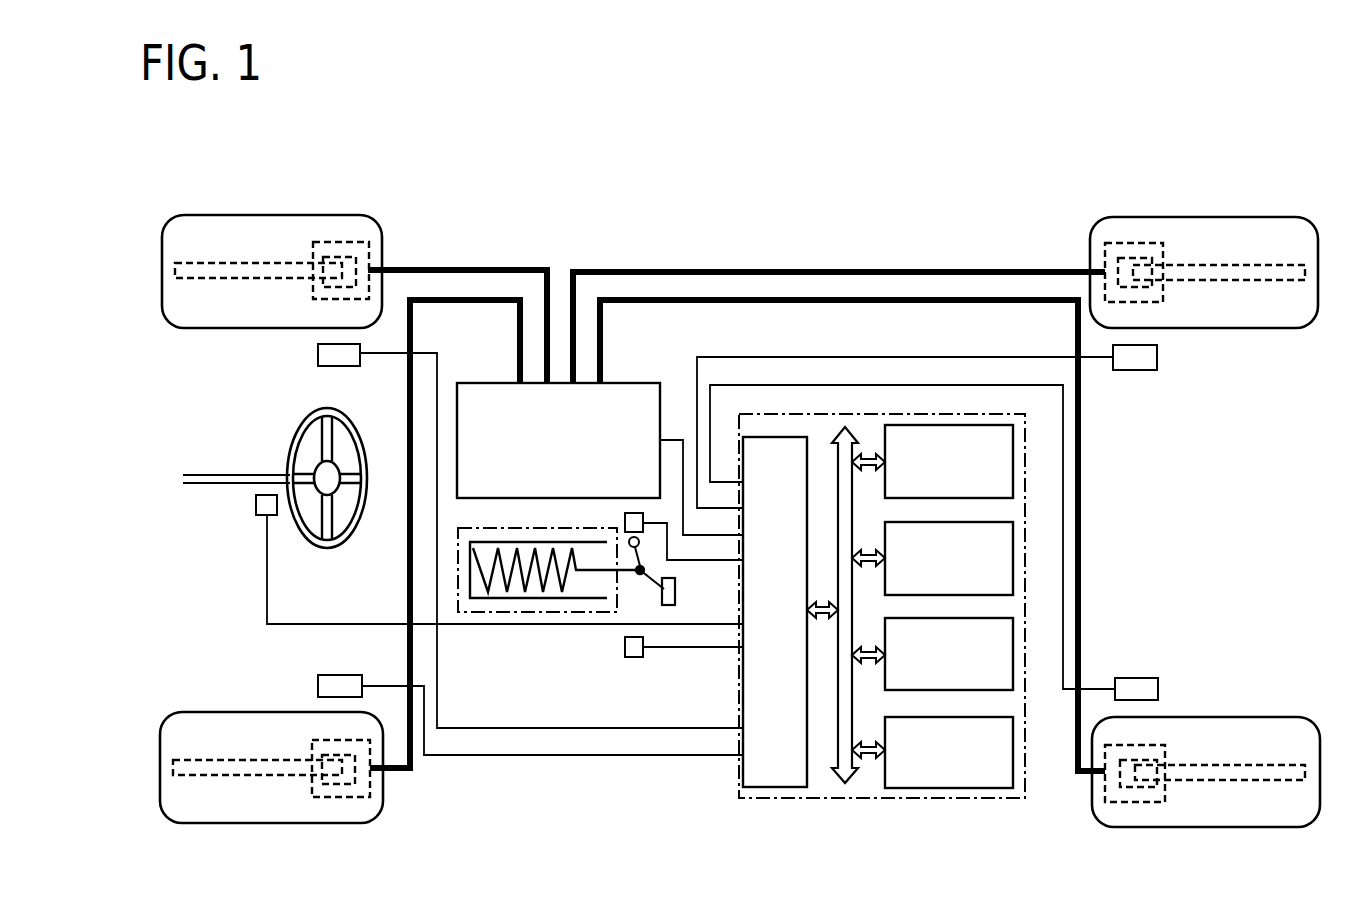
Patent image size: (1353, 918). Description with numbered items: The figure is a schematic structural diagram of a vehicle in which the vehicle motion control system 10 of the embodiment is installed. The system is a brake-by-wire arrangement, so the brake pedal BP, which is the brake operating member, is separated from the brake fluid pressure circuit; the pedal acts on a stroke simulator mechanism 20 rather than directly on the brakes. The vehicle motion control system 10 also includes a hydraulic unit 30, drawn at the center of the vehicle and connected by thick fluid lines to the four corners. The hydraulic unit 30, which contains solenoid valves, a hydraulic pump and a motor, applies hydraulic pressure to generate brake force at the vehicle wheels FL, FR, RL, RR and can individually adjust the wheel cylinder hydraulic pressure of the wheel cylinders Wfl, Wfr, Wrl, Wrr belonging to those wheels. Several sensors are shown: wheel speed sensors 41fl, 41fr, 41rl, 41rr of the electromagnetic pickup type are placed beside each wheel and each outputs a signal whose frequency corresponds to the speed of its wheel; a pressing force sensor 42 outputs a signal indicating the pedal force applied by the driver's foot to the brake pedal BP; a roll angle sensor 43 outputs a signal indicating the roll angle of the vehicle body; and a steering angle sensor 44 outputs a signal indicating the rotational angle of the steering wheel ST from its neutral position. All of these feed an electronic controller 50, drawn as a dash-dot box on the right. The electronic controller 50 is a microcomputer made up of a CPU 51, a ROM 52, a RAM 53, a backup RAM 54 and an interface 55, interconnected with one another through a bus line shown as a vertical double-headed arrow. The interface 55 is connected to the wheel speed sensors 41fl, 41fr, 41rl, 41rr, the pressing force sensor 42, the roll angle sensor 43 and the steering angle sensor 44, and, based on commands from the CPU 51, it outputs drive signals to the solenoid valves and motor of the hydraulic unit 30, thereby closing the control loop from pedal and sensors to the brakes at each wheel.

The vehicle motion control system 10 is at (775, 246).
The stroke simulator mechanism 20 is at (466, 528).
The hydraulic unit 30 is at (617, 383).
The wheel speed sensor 41fr is at (335, 366).
The wheel speed sensor 41fl is at (318, 688).
The wheel speed sensor 41rr is at (1135, 370).
The wheel speed sensor 41rl is at (1138, 678).
The pressing force sensor 42 is at (625, 518).
The roll angle sensor 43 is at (625, 650).
The steering angle sensor 44 is at (256, 505).
The electronic controller 50 is at (901, 614).
The CPU 51 is at (1013, 462).
The ROM 52 is at (1013, 558).
The RAM 53 is at (1013, 655).
The backup RAM 54 is at (1013, 750).
The interface 55 is at (778, 437).
The front-right vehicle wheel FR is at (226, 215).
The front-left vehicle wheel FL is at (300, 823).
The rear-right vehicle wheel RR is at (1228, 217).
The rear-left vehicle wheel RL is at (1230, 827).
The wheel cylinder Wfr is at (328, 242).
The wheel cylinder Wfl is at (370, 785).
The wheel cylinder Wrr is at (1127, 243).
The wheel cylinder Wrl is at (1123, 802).
The steering wheel ST is at (358, 428).
The brake pedal BP is at (675, 592).